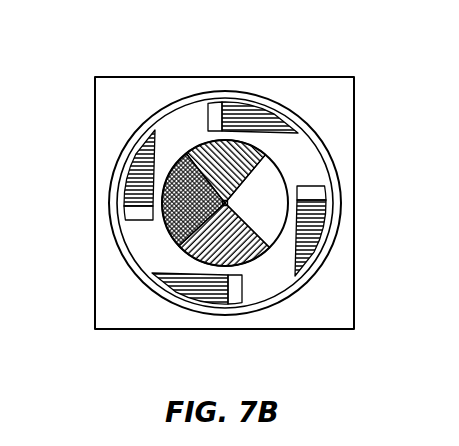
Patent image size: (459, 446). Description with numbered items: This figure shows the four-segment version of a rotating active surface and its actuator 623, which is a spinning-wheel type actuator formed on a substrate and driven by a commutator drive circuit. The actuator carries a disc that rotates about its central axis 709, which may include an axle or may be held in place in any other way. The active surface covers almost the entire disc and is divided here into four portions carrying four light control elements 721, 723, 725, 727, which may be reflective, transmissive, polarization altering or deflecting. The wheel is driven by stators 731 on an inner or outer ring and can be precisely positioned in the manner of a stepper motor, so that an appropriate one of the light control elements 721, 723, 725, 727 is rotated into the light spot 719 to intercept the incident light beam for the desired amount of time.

The actuator 623 is at (320, 268).
The central axis 709 is at (228, 203).
The light spot 719 is at (183, 133).
The light control element 721 is at (275, 217).
The light control element 723 is at (212, 139).
The light control element 725 is at (170, 228).
The light control element 727 is at (243, 248).
The stator 731 is at (262, 122).